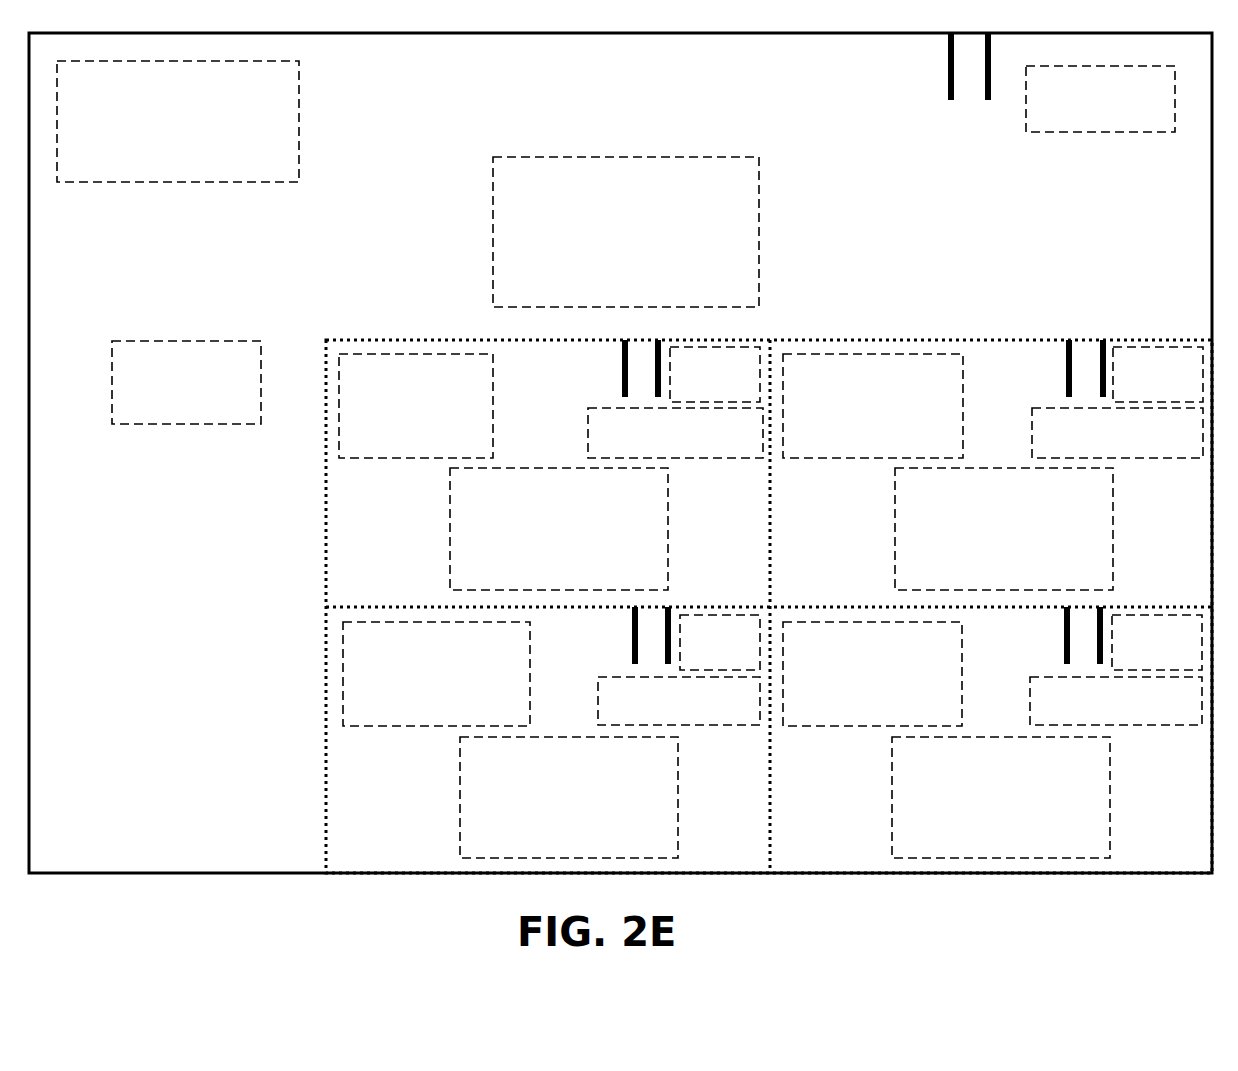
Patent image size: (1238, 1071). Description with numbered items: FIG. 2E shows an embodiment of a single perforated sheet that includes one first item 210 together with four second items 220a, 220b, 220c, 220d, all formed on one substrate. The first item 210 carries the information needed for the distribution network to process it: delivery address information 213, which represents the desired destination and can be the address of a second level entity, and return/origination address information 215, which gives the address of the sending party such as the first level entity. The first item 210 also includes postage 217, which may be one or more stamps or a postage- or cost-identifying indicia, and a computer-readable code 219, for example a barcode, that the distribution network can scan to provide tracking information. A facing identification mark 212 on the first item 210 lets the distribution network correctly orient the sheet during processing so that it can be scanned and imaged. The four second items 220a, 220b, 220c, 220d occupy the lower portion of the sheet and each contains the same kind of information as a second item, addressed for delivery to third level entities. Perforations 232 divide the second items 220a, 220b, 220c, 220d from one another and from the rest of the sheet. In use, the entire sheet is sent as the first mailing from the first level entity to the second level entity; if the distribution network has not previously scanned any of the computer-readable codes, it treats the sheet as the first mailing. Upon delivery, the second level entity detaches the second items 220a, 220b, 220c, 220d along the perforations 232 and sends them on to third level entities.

The first item 210 is at (494, 85).
The facing identification mark 212 is at (948, 67).
The delivery address information 213 is at (558, 157).
The return/origination address information 215 is at (300, 115).
The postage 217 is at (1026, 116).
The computer-readable code 219 is at (148, 424).
The second item 220a is at (581, 386).
The second item 220b is at (1028, 386).
The second item 220c is at (602, 643).
The second item 220d is at (1034, 643).
The perforations 232 is at (893, 340).